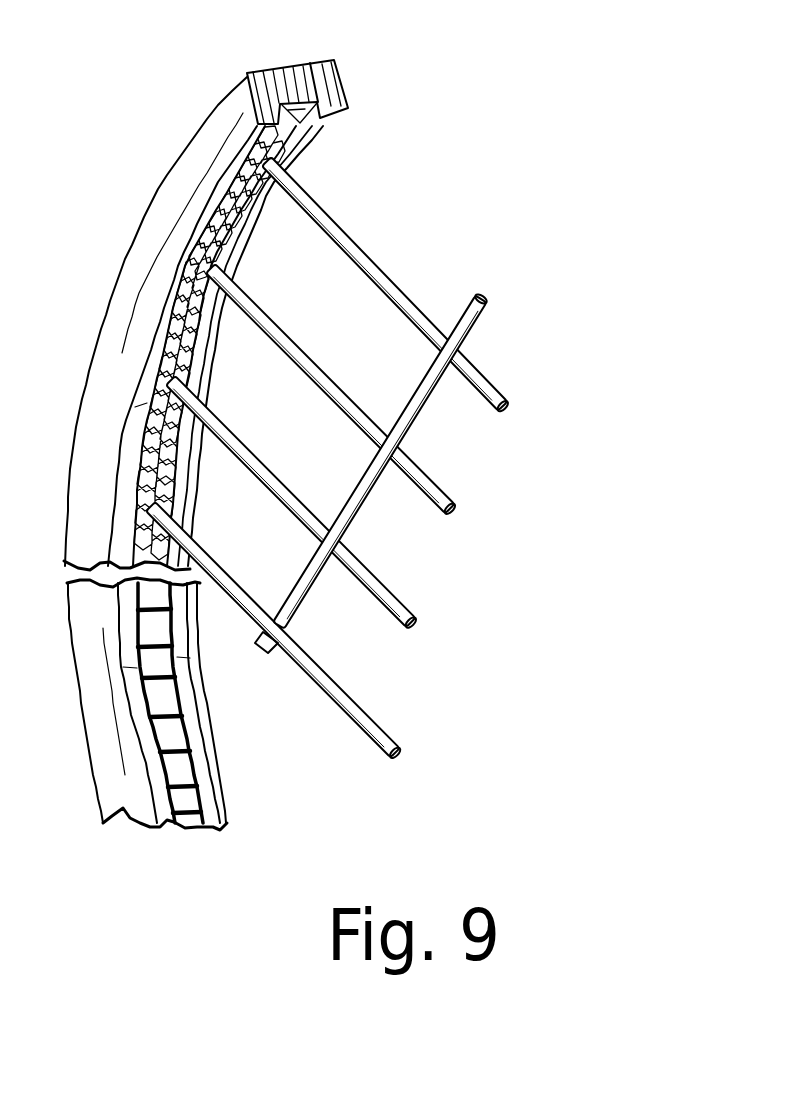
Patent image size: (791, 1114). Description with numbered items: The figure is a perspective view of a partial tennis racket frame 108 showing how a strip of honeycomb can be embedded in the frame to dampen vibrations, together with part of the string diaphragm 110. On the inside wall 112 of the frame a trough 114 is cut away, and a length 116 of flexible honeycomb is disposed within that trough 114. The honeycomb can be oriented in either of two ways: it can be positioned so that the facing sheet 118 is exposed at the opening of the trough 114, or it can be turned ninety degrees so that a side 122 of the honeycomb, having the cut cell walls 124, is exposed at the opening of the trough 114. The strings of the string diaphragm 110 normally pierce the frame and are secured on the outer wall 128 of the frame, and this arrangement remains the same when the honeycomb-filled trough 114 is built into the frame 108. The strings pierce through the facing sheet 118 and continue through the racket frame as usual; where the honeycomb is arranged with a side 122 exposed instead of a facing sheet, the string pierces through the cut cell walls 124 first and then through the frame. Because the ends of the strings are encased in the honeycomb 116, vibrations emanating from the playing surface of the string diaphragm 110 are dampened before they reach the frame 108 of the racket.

The tennis racket frame 108 is at (313, 63).
The string diaphragm 110 is at (460, 337).
The inside wall 112 is at (203, 223).
The trough 114 is at (340, 122).
The length of flexible honeycomb 116 is at (237, 333).
The facing sheet 118 is at (170, 500).
The side of the honeycomb 122 is at (167, 732).
The cut cell walls 124 is at (283, 817).
The outer wall 128 is at (162, 197).